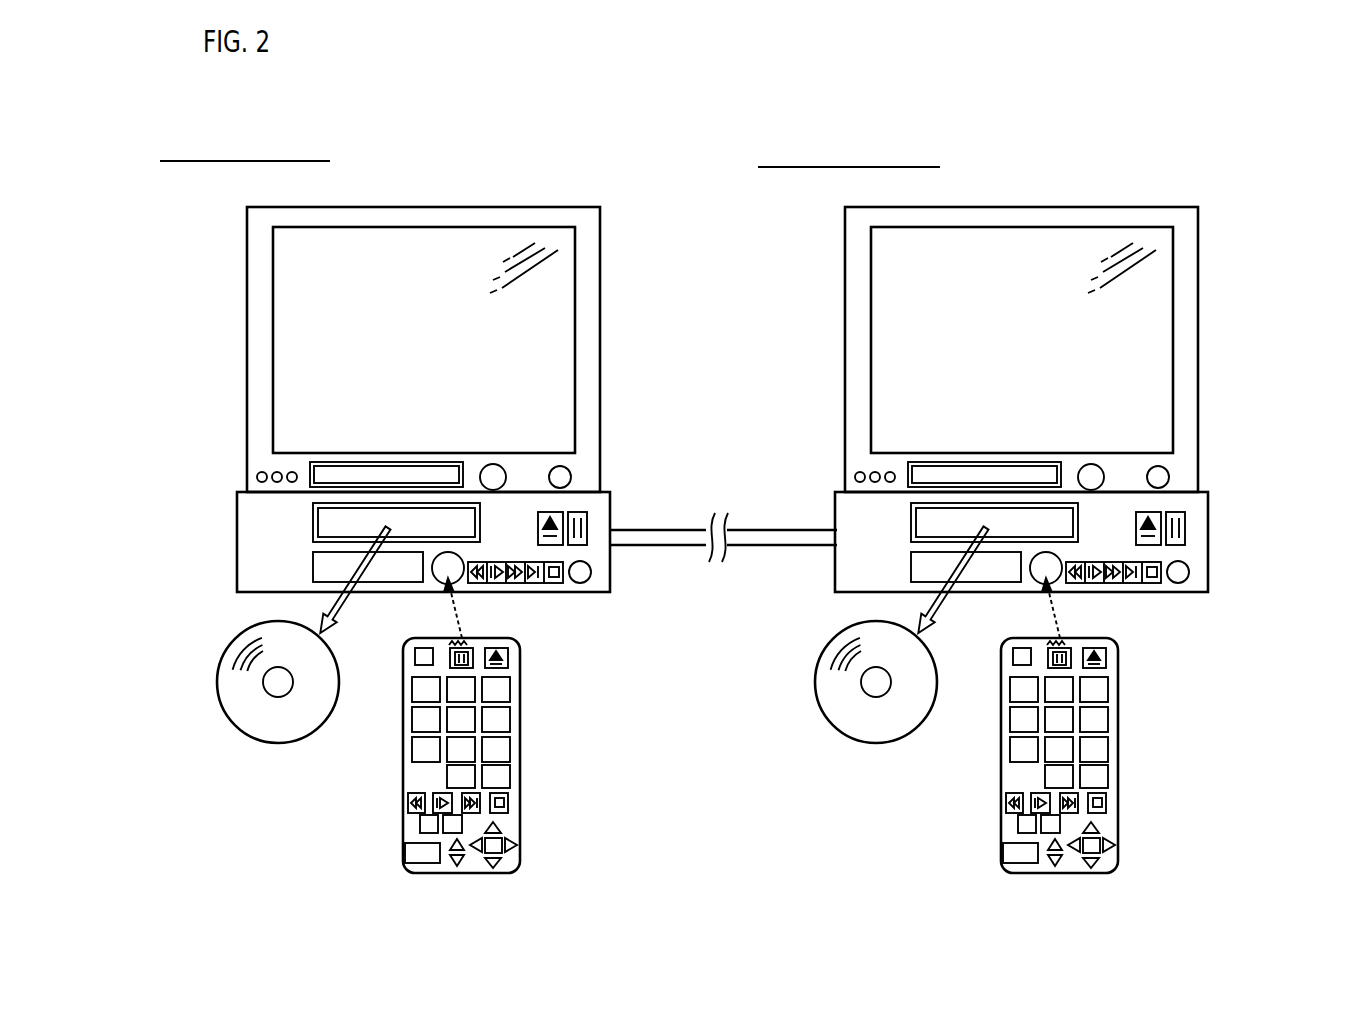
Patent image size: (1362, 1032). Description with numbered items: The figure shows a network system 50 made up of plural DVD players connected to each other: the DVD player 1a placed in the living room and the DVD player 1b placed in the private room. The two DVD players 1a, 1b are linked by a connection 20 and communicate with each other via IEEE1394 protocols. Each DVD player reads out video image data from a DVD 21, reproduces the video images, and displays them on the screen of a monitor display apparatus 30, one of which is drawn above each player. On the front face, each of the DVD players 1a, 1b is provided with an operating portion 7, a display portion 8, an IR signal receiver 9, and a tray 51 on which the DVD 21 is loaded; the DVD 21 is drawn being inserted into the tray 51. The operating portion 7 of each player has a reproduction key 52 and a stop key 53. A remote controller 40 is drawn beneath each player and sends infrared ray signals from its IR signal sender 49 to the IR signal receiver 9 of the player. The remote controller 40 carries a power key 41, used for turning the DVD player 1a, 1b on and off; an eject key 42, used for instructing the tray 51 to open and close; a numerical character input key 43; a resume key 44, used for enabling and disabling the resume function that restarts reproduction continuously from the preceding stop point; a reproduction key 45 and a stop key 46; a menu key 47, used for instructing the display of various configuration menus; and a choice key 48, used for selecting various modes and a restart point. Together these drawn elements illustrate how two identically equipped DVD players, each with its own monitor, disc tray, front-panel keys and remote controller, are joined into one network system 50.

The DVD player 1a is at (402, 532).
The DVD player 1b is at (1024, 562).
The operating portion 7 is at (423, 564).
The display portion 8 is at (368, 604).
The IR signal receiver 9 is at (465, 588).
The communication line 20 is at (723, 520).
The DVD 21 is at (278, 712).
The monitor display apparatus 30 is at (423, 323).
The remote controller 40 is at (535, 743).
The power key 41 is at (395, 660).
The eject key 42 is at (544, 664).
The numerical character input key 43 is at (429, 734).
The resume key 44 is at (606, 768).
The reproduction key 45 is at (410, 808).
The stop key 46 is at (548, 796).
The menu key 47 is at (400, 873).
The choice key 48 is at (513, 865).
The IR signal sender 49 is at (508, 617).
The network system 50 is at (736, 514).
The tray 51 is at (312, 568).
The reproduction key 52 is at (544, 531).
The stop key 53 is at (562, 566).